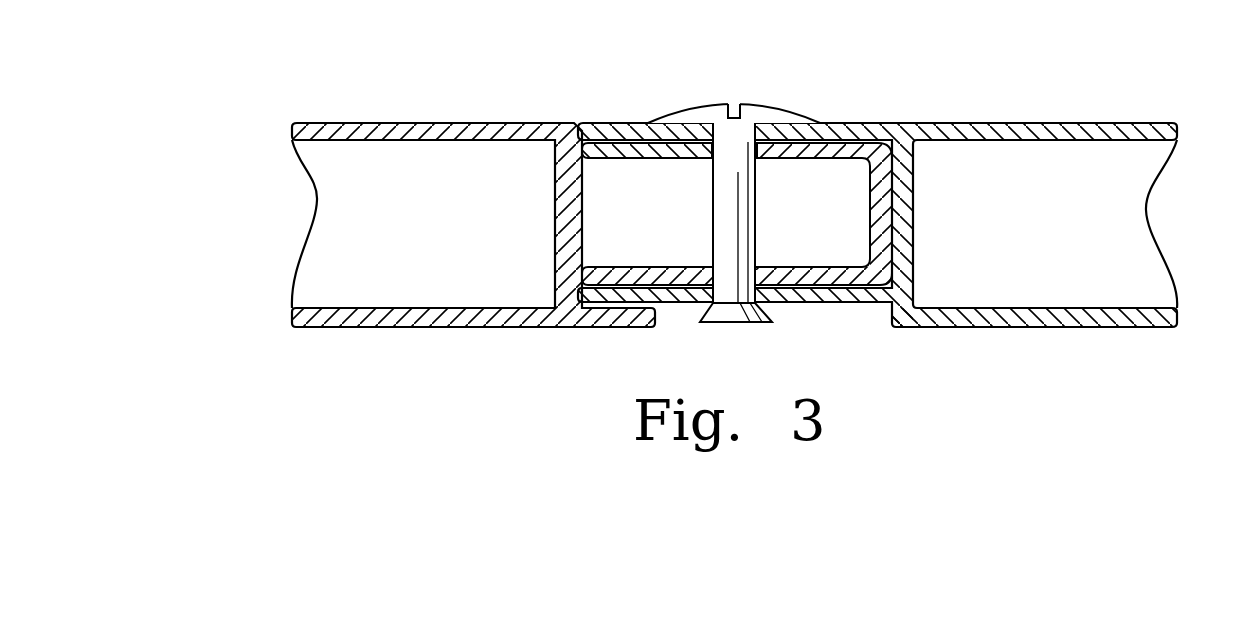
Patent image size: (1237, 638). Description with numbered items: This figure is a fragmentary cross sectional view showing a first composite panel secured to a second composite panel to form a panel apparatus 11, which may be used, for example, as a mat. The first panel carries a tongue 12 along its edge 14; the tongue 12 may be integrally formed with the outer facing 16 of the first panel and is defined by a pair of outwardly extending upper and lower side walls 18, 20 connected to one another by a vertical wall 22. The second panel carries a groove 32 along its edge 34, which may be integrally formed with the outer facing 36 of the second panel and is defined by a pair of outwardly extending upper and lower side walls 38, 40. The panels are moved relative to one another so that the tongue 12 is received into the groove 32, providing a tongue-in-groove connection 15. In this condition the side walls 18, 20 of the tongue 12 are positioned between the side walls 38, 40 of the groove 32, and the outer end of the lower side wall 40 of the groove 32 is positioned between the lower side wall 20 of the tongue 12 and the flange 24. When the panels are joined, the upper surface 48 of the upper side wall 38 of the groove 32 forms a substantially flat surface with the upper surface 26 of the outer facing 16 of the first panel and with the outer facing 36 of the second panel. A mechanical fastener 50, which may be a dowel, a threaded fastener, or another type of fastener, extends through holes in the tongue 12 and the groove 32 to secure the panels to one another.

The panel apparatus 11 is at (734, 196).
The tongue 12 is at (691, 255).
The edge 14 is at (566, 237).
The tongue-in-groove connection 15 is at (793, 320).
The outer facing 16 is at (479, 228).
The side wall 18 is at (630, 160).
The side wall 20 is at (775, 268).
The vertical wall 22 is at (878, 212).
The flange 24 is at (640, 328).
The upper surface 26 is at (375, 130).
The groove 32 is at (600, 252).
The edge 34 is at (896, 226).
The outer facing 36 is at (877, 224).
The side wall 38 is at (622, 128).
The side wall 40 is at (676, 302).
The upper surface 48 is at (845, 123).
The mechanical fastener 50 is at (777, 110).